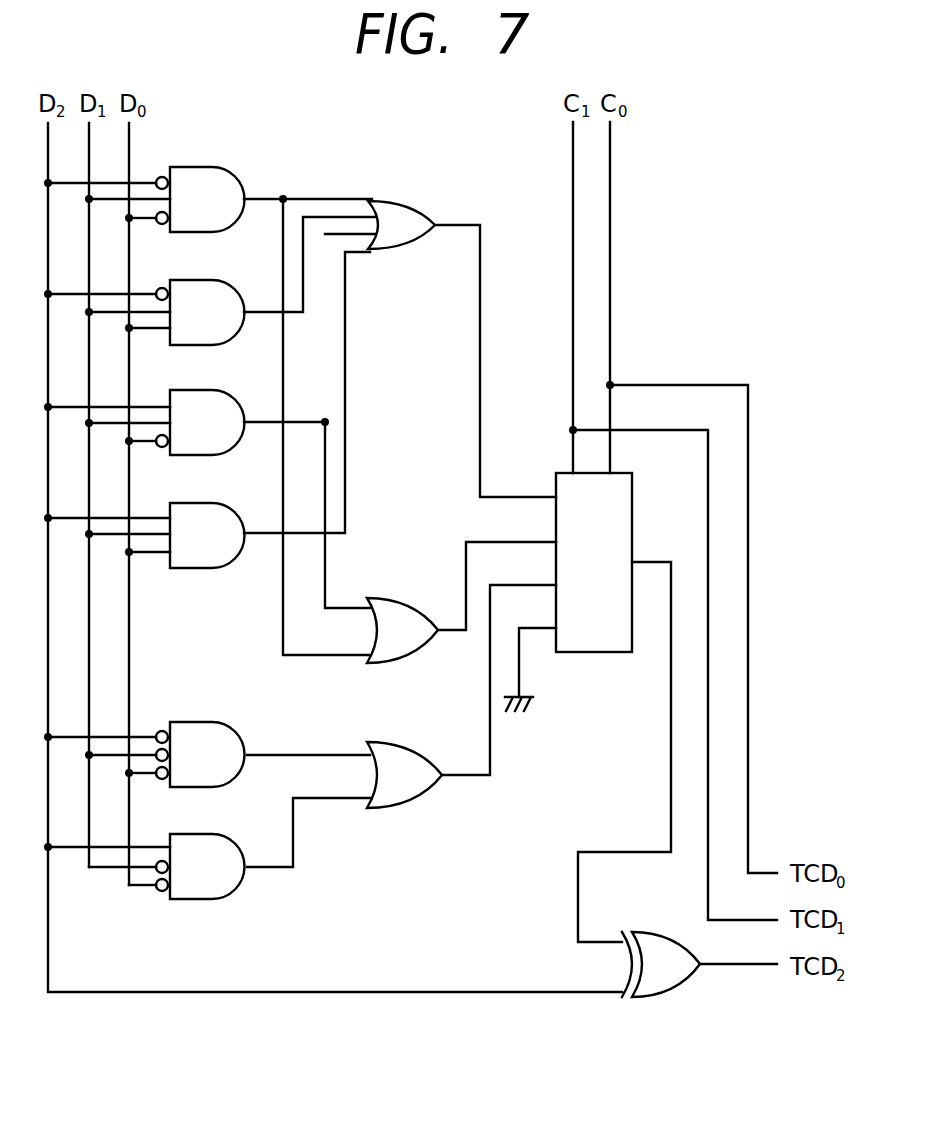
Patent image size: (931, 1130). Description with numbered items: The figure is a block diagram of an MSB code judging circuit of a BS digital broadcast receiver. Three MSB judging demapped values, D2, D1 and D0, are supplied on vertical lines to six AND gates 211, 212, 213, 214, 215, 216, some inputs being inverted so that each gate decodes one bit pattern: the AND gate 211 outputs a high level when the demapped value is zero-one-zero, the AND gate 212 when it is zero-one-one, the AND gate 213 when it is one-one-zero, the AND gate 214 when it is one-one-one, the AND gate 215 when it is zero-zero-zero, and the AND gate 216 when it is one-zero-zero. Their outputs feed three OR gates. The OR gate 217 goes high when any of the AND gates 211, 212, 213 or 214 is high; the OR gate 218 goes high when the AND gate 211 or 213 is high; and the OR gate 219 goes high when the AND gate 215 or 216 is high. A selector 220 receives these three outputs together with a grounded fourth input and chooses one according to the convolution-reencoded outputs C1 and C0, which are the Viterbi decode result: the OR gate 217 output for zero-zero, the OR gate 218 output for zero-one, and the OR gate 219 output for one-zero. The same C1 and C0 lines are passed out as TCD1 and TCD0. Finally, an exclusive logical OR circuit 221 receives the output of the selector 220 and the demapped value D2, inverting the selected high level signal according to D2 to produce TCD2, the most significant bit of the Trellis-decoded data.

The AND gate 211 is at (222, 166).
The AND gate 212 is at (222, 279).
The AND gate 213 is at (222, 389).
The AND gate 214 is at (222, 502).
The AND gate 215 is at (222, 721).
The AND gate 216 is at (222, 833).
The OR gate 217 is at (418, 206).
The OR gate 218 is at (382, 600).
The OR gate 219 is at (392, 742).
The selector 220 is at (592, 652).
The exclusive logical OR circuit 221 is at (646, 932).